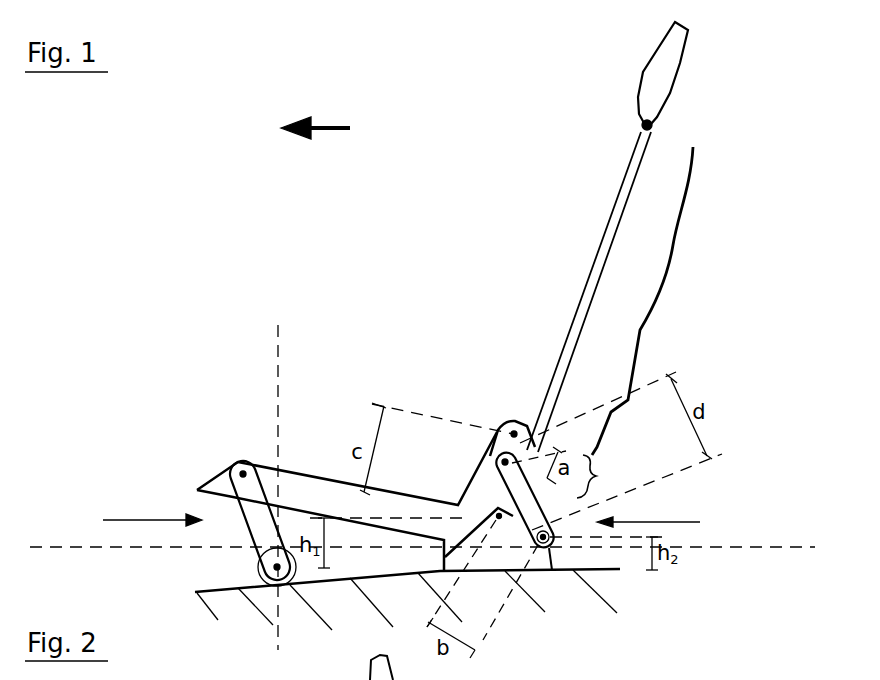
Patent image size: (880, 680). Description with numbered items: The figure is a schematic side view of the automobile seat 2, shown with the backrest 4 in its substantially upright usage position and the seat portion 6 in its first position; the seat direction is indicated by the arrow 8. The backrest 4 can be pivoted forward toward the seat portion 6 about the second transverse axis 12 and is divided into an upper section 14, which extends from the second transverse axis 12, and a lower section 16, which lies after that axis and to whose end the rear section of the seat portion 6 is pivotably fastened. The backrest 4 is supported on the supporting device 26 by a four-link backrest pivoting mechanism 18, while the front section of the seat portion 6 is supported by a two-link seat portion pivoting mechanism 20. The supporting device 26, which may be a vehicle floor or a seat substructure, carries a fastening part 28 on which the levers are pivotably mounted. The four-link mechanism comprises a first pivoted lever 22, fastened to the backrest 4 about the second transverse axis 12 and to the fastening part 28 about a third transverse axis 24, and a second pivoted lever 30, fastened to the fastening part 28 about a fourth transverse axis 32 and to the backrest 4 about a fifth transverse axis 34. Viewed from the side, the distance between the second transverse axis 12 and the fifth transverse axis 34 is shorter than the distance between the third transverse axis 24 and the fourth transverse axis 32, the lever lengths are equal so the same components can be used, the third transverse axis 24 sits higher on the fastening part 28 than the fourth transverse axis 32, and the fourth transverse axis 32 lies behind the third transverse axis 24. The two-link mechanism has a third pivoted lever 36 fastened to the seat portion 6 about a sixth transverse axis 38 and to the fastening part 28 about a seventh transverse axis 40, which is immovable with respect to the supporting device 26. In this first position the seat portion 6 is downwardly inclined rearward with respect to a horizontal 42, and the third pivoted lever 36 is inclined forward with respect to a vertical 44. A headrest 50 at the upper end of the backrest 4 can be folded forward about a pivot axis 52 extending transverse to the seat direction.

The automobile seat 2 is at (162, 170).
The backrest 4 is at (595, 262).
The seat portion 6 is at (312, 493).
The arrow 8 is at (348, 126).
The second transverse axis 12 is at (508, 424).
The upper section 14 is at (642, 301).
The lower section 16 is at (598, 476).
The four-link backrest pivoting mechanism 18 is at (663, 522).
The two-link seat portion pivoting mechanism 20 is at (137, 520).
The first pivoted lever 22 is at (488, 495).
The third transverse axis 24 is at (499, 522).
The supporting device 26 is at (624, 591).
The fastening part 28 is at (263, 580).
The second pivoted lever 30 is at (535, 515).
The fourth transverse axis 32 is at (544, 545).
The fifth transverse axis 34 is at (500, 458).
The third pivoted lever 36 is at (258, 525).
The sixth transverse axis 38 is at (233, 468).
The seventh transverse axis 40 is at (280, 578).
The horizontal 42 is at (58, 545).
The vertical 44 is at (263, 340).
The headrest 50 is at (651, 77).
The pivot axis 52 is at (645, 125).